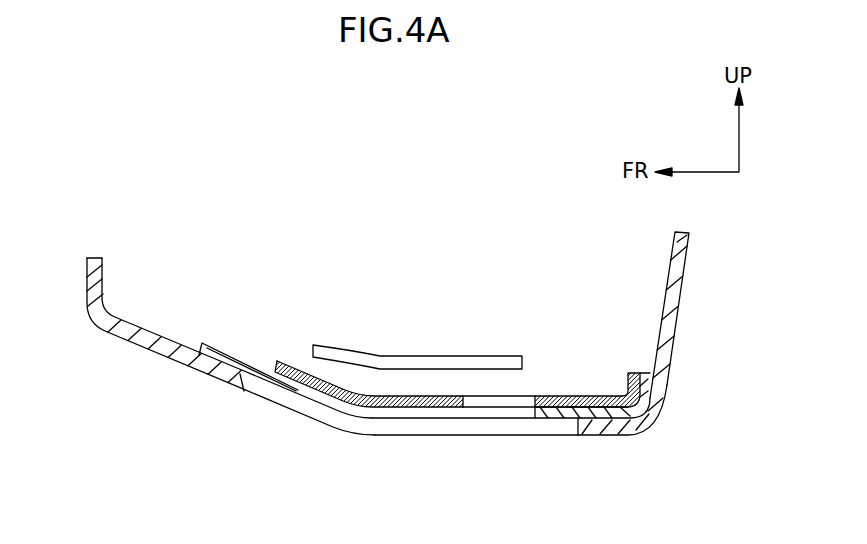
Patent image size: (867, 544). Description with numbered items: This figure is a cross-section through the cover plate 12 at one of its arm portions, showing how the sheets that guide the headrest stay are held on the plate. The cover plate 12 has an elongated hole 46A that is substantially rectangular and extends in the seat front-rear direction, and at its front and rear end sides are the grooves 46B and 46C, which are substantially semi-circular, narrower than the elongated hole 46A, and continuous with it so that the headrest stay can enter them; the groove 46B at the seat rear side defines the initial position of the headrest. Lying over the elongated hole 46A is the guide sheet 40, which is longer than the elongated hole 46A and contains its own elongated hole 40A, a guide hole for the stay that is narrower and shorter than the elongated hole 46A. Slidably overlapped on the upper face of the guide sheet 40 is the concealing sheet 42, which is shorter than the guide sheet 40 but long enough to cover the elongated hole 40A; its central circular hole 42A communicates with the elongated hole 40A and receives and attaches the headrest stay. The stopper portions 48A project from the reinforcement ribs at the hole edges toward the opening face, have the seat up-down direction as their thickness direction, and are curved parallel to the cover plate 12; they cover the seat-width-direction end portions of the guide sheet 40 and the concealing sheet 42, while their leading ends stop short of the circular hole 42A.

The cover plate 12 is at (157, 357).
The guide sheet 40 is at (233, 348).
The elongated hole 40A is at (523, 410).
The concealing sheet 42 is at (588, 395).
The circular hole 42A is at (535, 395).
The elongated hole 46A is at (378, 437).
The groove 46B is at (578, 418).
The groove 46C is at (247, 392).
The stopper portion 48A is at (335, 343).